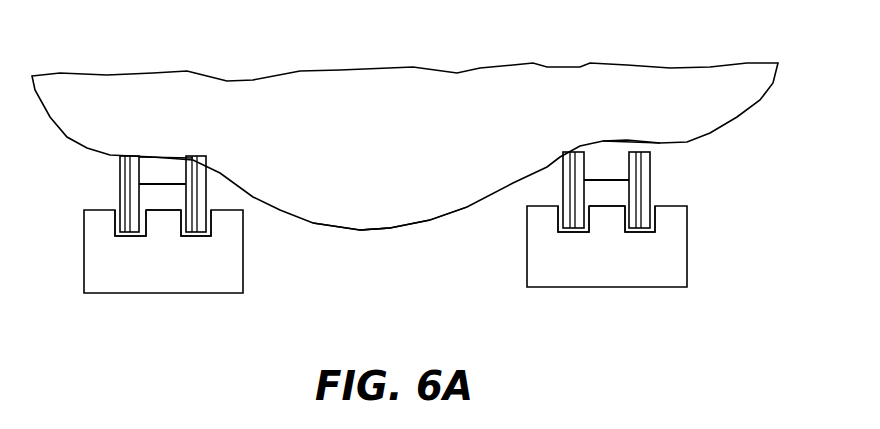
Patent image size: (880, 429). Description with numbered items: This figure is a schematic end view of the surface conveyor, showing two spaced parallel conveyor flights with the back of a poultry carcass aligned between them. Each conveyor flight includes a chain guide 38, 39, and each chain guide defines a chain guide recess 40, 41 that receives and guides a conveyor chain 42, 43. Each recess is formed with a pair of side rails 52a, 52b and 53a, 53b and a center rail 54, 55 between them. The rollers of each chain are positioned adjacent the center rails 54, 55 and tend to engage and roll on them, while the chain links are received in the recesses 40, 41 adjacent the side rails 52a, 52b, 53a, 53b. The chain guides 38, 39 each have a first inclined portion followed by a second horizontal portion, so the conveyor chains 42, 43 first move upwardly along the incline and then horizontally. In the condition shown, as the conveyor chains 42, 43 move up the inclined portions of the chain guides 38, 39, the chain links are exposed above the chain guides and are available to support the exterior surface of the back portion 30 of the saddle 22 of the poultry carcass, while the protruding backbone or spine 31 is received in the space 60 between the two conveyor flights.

The saddle 22 is at (737, 128).
The back portion 30 is at (391, 213).
The backbone or spine 31 is at (375, 230).
The chain guide 38 is at (215, 292).
The chain guide 39 is at (545, 273).
The chain guide recess 40 is at (206, 164).
The chain guide recess 41 is at (605, 155).
The conveyor chain 42 is at (191, 148).
The conveyor chain 43 is at (634, 131).
The side rail 52a is at (98, 208).
The side rail 52b is at (225, 221).
The side rail 53a is at (547, 215).
The side rail 53b is at (667, 213).
The center rail 54 is at (159, 227).
The center rail 55 is at (604, 223).
The space 60 is at (480, 248).